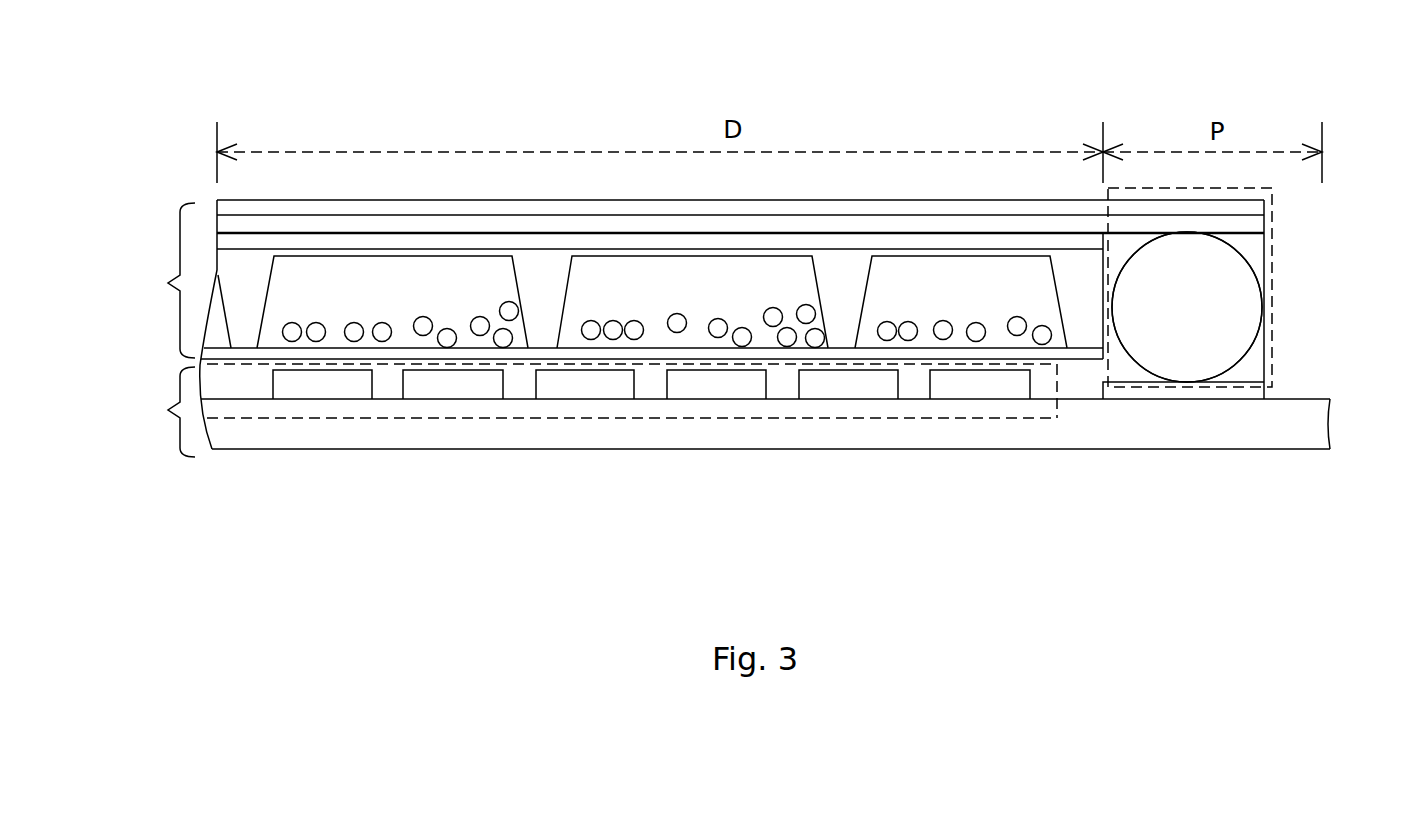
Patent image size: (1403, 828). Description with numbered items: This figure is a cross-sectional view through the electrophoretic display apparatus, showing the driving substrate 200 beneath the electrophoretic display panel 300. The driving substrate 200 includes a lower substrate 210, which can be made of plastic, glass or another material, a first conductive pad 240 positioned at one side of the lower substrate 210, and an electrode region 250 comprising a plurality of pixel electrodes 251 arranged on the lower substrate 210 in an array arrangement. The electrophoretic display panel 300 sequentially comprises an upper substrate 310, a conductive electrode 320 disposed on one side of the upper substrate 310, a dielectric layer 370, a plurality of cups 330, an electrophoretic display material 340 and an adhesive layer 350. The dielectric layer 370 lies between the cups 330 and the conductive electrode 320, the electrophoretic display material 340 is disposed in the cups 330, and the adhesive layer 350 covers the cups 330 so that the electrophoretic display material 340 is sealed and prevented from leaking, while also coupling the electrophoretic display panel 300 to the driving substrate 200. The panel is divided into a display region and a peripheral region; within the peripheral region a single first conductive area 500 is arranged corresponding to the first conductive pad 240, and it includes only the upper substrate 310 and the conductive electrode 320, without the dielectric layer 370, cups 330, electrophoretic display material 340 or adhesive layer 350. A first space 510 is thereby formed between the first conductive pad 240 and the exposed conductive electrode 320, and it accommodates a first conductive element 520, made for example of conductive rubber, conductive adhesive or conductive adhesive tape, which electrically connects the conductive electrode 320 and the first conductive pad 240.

The driving substrate 200 is at (156, 412).
The lower substrate 210 is at (1313, 428).
The first conductive pad 240 is at (1256, 393).
The electrode region 250 is at (392, 417).
The pixel electrodes 251 is at (601, 384).
The electrophoretic display panel 300 is at (174, 324).
The upper substrate 310 is at (1256, 207).
The conductive electrode 320 is at (1257, 225).
The cups 330 is at (598, 272).
The electrophoretic display material 340 is at (942, 320).
The adhesive layer 350 is at (1077, 353).
The dielectric layer 370 is at (322, 244).
The first conductive area 500 is at (1282, 197).
The first space 510 is at (1256, 255).
The first conductive element 520 is at (1224, 302).